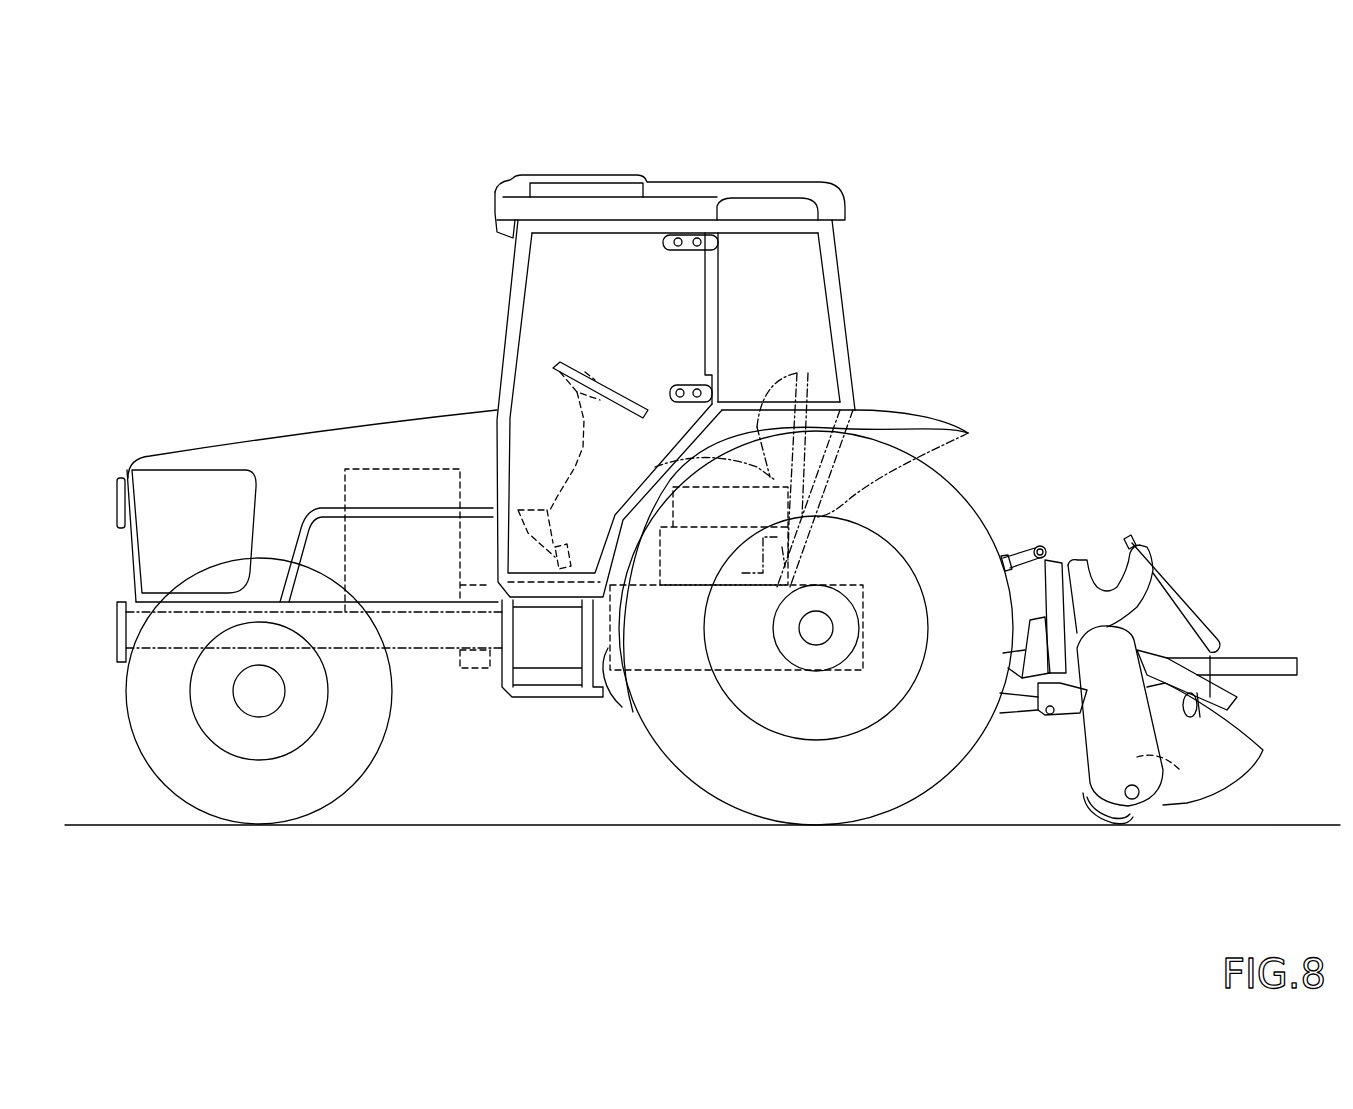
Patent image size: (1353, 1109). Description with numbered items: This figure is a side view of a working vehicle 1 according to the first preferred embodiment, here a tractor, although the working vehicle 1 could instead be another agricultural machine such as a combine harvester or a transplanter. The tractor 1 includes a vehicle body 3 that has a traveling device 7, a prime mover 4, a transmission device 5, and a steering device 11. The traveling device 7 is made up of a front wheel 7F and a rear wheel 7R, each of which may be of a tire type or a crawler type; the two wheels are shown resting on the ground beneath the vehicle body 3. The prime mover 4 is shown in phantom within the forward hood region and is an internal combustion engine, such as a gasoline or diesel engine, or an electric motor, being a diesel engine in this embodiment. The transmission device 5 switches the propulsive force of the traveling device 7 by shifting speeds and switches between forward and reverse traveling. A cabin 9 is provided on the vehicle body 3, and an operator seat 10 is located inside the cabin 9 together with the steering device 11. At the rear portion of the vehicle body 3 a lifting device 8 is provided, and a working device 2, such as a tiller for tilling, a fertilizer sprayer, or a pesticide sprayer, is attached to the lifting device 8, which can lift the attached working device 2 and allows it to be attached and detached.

The working vehicle 1 is at (913, 152).
The working device 2 is at (1185, 563).
The vehicle body 3 is at (425, 656).
The prime mover 4 is at (467, 547).
The transmission device 5 is at (607, 648).
The traveling device 7 is at (569, 702).
The front wheel 7F is at (312, 800).
The rear wheel 7R is at (816, 677).
The lifting device 8 is at (1015, 548).
The cabin 9 is at (845, 313).
The operator seat 10 is at (807, 373).
The steering device 11 is at (583, 372).